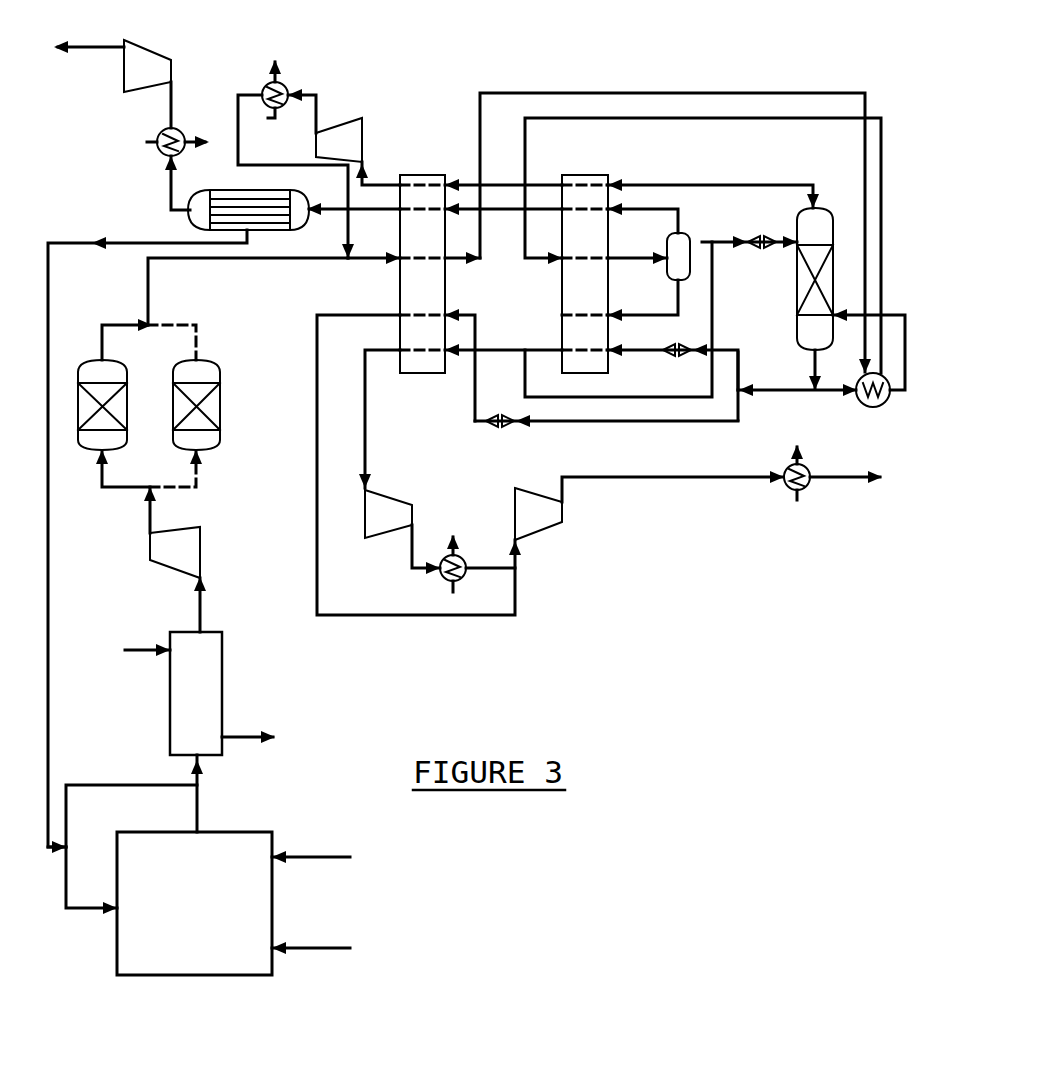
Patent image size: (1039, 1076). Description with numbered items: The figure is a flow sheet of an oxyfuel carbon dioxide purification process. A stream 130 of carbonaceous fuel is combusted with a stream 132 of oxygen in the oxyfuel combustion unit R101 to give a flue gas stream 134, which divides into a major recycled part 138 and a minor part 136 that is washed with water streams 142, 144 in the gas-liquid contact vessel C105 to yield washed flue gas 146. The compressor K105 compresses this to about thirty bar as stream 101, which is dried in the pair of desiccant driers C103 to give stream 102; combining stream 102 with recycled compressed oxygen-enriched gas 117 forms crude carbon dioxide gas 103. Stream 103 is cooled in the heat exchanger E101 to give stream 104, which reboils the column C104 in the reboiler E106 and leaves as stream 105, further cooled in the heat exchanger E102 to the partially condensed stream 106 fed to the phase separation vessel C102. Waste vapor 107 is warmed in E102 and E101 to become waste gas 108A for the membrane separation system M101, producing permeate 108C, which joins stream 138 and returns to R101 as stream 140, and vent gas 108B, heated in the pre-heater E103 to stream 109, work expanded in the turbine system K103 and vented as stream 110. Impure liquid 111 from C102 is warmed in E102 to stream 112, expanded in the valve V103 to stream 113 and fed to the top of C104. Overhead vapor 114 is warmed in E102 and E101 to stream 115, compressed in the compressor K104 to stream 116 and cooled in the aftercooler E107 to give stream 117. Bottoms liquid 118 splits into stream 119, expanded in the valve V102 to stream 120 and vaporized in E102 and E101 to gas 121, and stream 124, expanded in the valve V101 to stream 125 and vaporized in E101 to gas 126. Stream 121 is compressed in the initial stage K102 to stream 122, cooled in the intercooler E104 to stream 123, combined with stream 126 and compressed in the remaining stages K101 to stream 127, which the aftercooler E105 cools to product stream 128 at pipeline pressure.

The compressed flue gas stream 101 is at (150, 513).
The contaminated carbon dioxide gas stream 102 is at (310, 262).
The crude carbon dioxide gas stream 103 is at (372, 262).
The crude carbon dioxide fluid stream 104 is at (701, 92).
The cooled crude carbon dioxide fluid stream 105 is at (727, 122).
The partially condensed crude carbon dioxide fluid stream 106 is at (645, 258).
The waste vapor stream 107 is at (680, 224).
The waste gas stream 108A is at (328, 209).
The vent gas stream 108B is at (171, 185).
The permeate stream 108C is at (112, 243).
The heated vent gas stream 109 is at (170, 108).
The expanded vent gas stream 110 is at (101, 46).
The impure carbon dioxide liquid stream 111 is at (656, 315).
The warmed impure carbon dioxide liquid stream 112 is at (706, 318).
The expanded impure carbon dioxide liquid stream 113 is at (776, 242).
The oxygen-enriched overhead vapor stream 114 is at (694, 183).
The oxygen-enriched gas stream 115 is at (375, 180).
The compressed oxygen-enriched gas stream 116 is at (318, 97).
The compressed oxygen-enriched gas stream 117 is at (238, 107).
The carbon dioxide-enriched bottoms liquid stream 118 is at (760, 396).
The bottoms liquid portion stream 119 is at (733, 378).
The expanded carbon dioxide-enriched liquid stream 120 is at (642, 355).
The carbon dioxide gas stream 121 is at (367, 395).
The compressed carbon dioxide gas stream 122 is at (404, 549).
The cooled compressed carbon dioxide gas stream 123 is at (486, 565).
The bottoms liquid portion stream 124 is at (655, 426).
The expanded carbon dioxide-enriched liquid stream 125 is at (475, 397).
The carbon dioxide gas stream 126 is at (317, 371).
The further compressed carbon dioxide gas stream 127 is at (600, 485).
The compressed carbon dioxide gas stream 128 is at (850, 480).
The carbonaceous fuel stream 130 is at (339, 864).
The oxygen stream 132 is at (339, 956).
The flue gas stream 134 is at (204, 813).
The minor flue gas part stream 136 is at (204, 781).
The major flue gas part stream 138 is at (137, 785).
The recycle stream 140 is at (48, 889).
The wash water stream 142 is at (128, 650).
The wash water stream 144 is at (232, 737).
The washed flue gas stream 146 is at (206, 610).
The compressor stage K101 is at (535, 486).
The compressor initial stage K102 is at (393, 500).
The turbine system K103 is at (152, 48).
The compressor K104 is at (344, 124).
The compressor K105 is at (203, 556).
The heat exchanger E101 is at (449, 172).
The heat exchanger E102 is at (566, 170).
The pre-heater E103 is at (164, 151).
The intercooler E104 is at (441, 580).
The aftercooler E105 is at (785, 486).
The reboiler E106 is at (866, 406).
The aftercooler E107 is at (286, 86).
The cold end phase separation vessel C102 is at (702, 243).
The thermally regenerated desiccant driers C103 is at (222, 435).
The column C104 is at (797, 294).
The gas-liquid contact vessel C105 is at (222, 688).
The membrane separation system M101 is at (262, 190).
The oxyfuel combustion unit R101 is at (210, 978).
The valve V101 is at (505, 432).
The valve V102 is at (693, 345).
The valve V103 is at (756, 261).